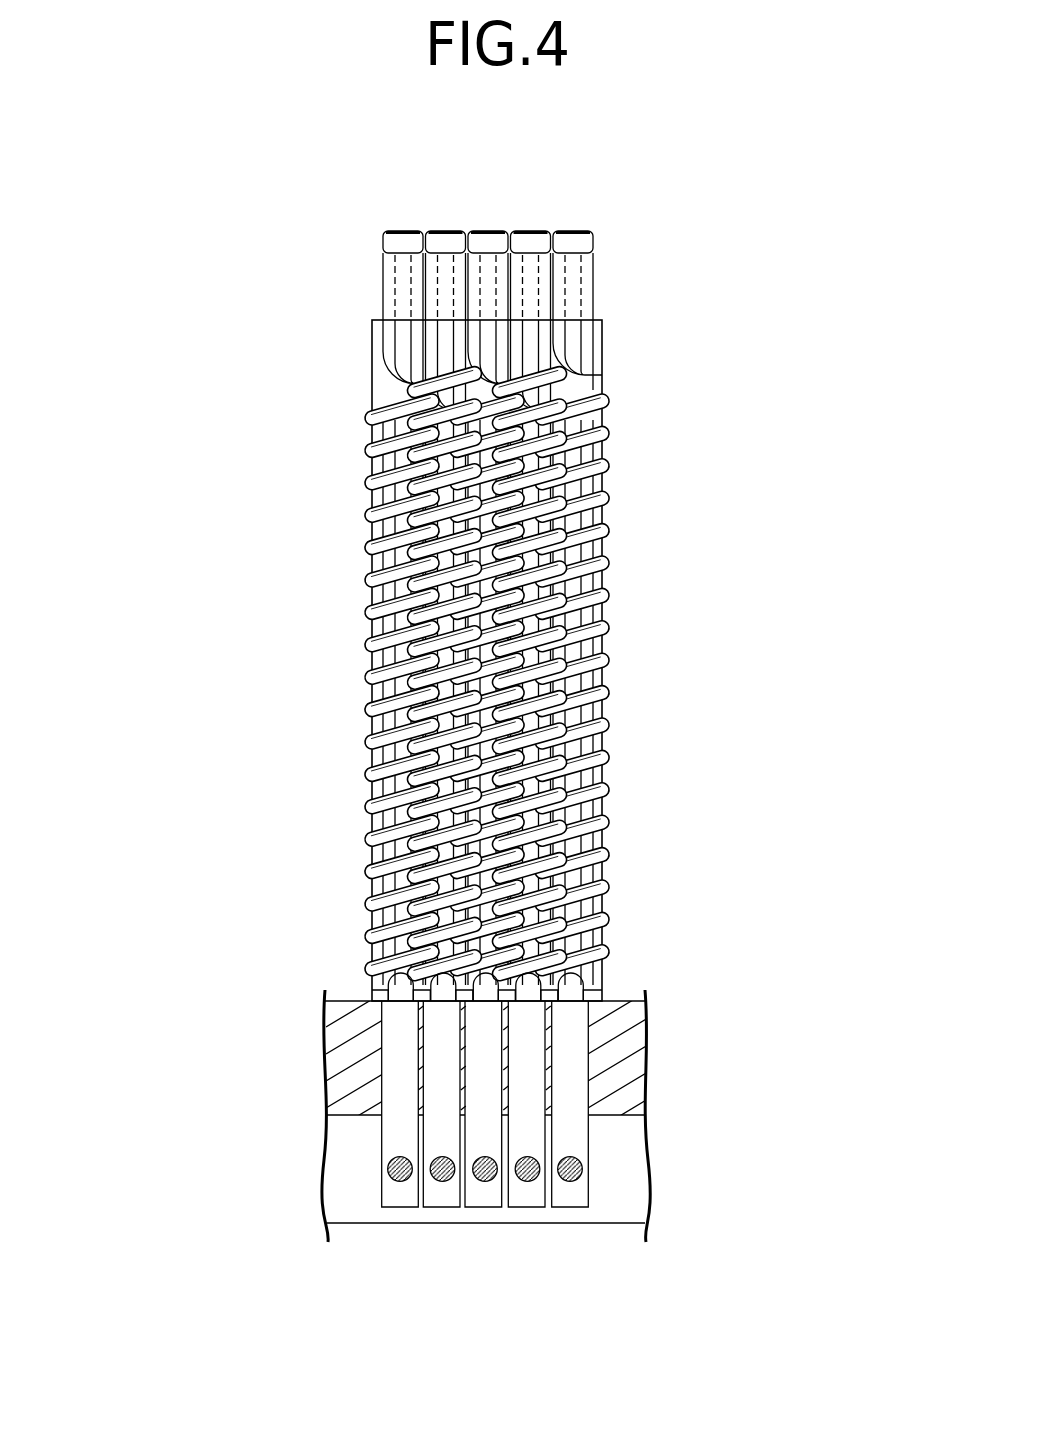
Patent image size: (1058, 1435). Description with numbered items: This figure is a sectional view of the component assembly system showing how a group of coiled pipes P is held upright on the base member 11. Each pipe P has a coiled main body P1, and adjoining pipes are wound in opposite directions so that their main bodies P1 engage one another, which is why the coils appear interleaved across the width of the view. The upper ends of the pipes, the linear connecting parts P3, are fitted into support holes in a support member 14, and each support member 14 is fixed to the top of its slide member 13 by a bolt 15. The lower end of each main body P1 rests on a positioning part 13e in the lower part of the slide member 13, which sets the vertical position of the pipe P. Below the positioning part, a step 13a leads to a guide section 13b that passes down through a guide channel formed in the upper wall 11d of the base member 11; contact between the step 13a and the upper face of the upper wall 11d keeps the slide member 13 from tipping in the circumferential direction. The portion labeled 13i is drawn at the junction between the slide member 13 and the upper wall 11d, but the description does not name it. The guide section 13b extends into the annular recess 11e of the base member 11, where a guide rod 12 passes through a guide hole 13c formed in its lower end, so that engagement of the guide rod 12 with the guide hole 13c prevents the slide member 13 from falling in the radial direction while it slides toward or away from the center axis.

The support member 14 is at (371, 269).
The bolt 15 is at (399, 236).
The connecting part P3 is at (405, 343).
The slide member 13 is at (369, 378).
The pipe P is at (350, 681).
The main body P1 is at (383, 768).
The positioning part 13e is at (388, 985).
The step 13a is at (363, 1020).
The upper wall 11d is at (597, 1016).
The insertion portion 13i is at (380, 1042).
The base member 11 is at (659, 1065).
The guide section 13b is at (397, 1080).
The annular recess 11e is at (616, 1172).
The guide rod 12 is at (402, 1182).
The guide hole 13c is at (443, 1182).